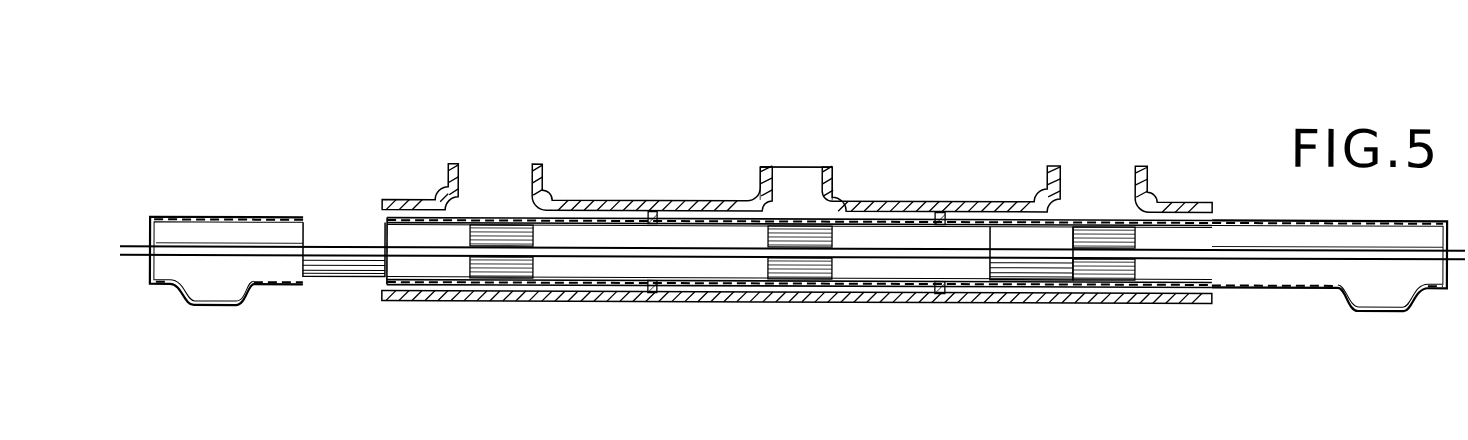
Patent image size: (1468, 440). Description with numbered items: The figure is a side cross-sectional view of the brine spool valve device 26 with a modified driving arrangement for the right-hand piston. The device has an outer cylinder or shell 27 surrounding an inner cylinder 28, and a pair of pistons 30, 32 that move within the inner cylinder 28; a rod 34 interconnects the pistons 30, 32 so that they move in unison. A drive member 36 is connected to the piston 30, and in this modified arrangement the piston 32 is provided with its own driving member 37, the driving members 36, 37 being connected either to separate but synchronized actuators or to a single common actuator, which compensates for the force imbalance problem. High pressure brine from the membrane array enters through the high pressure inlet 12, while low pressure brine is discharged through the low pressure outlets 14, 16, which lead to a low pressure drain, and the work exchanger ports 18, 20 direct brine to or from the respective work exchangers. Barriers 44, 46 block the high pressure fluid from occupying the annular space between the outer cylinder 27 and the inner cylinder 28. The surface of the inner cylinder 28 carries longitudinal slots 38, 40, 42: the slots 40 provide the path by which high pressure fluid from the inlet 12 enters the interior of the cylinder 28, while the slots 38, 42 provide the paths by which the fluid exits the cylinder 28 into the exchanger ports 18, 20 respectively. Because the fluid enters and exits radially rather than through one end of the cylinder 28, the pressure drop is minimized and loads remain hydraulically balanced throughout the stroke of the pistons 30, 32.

The high pressure inlet 12 is at (782, 190).
The low pressure outlet 14 is at (214, 290).
The low pressure outlet 16 is at (1375, 298).
The work exchanger port 18 is at (476, 192).
The work exchanger port 20 is at (1113, 190).
The brine spool valve device 26 is at (822, 106).
The outer cylinder or shell 27 is at (888, 200).
The inner cylinder 28 is at (695, 222).
The piston 30 is at (317, 242).
The piston 32 is at (1015, 245).
The rod 34 is at (737, 258).
The drive member 36 is at (183, 242).
The driving member 37 is at (1270, 258).
The longitudinal slot 38 is at (480, 262).
The longitudinal slot 40 is at (800, 268).
The longitudinal slot 42 is at (1092, 265).
The barrier 44 is at (655, 213).
The barrier 46 is at (937, 214).